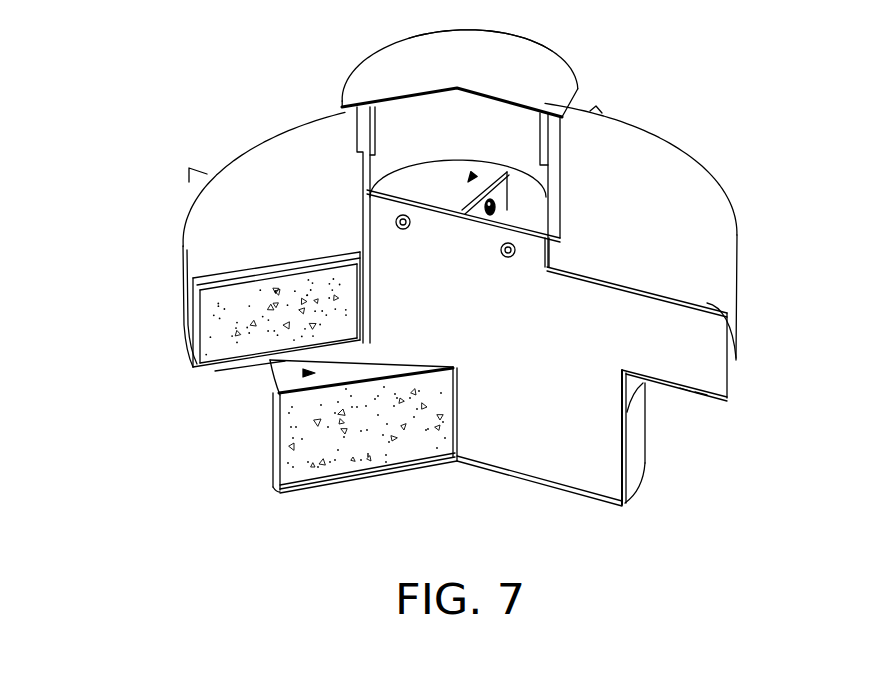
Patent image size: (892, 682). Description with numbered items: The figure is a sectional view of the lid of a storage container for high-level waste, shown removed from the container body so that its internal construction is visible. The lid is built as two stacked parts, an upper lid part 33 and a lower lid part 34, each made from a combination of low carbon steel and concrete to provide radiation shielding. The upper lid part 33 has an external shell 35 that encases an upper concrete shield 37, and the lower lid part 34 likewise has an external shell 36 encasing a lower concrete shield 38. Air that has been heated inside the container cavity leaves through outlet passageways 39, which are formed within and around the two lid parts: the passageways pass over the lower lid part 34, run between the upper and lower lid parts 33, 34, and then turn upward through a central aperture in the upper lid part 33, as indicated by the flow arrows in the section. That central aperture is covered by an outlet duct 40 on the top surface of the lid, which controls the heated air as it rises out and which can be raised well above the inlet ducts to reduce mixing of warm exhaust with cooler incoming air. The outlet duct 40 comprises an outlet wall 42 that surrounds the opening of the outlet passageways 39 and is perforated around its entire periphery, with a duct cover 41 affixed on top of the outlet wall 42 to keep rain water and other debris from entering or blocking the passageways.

The upper lid part 33 is at (195, 225).
The lower lid part 34 is at (641, 489).
The external shell 35 is at (220, 270).
The external shell 36 is at (273, 458).
The upper concrete shield 37 is at (207, 312).
The lower concrete shield 38 is at (312, 463).
The outlet passageways 39 is at (468, 182).
The outlet duct 40 is at (377, 45).
The duct cover 41 is at (540, 60).
The outlet wall 42 is at (560, 183).